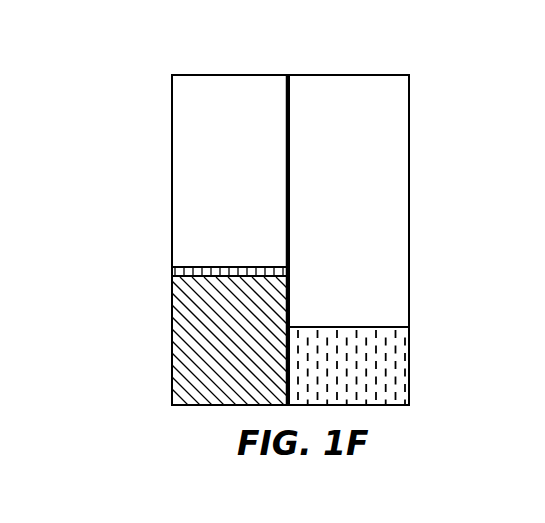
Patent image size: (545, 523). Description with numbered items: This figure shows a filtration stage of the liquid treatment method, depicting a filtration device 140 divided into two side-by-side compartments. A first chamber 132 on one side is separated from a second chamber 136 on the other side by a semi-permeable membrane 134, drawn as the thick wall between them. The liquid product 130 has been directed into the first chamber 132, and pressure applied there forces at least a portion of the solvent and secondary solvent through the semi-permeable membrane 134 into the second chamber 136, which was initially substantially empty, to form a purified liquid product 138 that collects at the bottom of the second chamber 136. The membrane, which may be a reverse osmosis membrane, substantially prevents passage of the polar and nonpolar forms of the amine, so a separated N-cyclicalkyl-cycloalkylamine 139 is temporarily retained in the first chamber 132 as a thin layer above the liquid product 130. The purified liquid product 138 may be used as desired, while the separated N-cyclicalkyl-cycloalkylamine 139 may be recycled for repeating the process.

The filtration device 140 is at (104, 184).
The first chamber 132 is at (227, 102).
The semi-permeable membrane 134 is at (287, 123).
The second chamber 136 is at (380, 136).
The separated N-cyclicalkyl-cycloalkylamine 139 is at (173, 269).
The liquid product 130 is at (197, 353).
The purified liquid product 138 is at (396, 368).